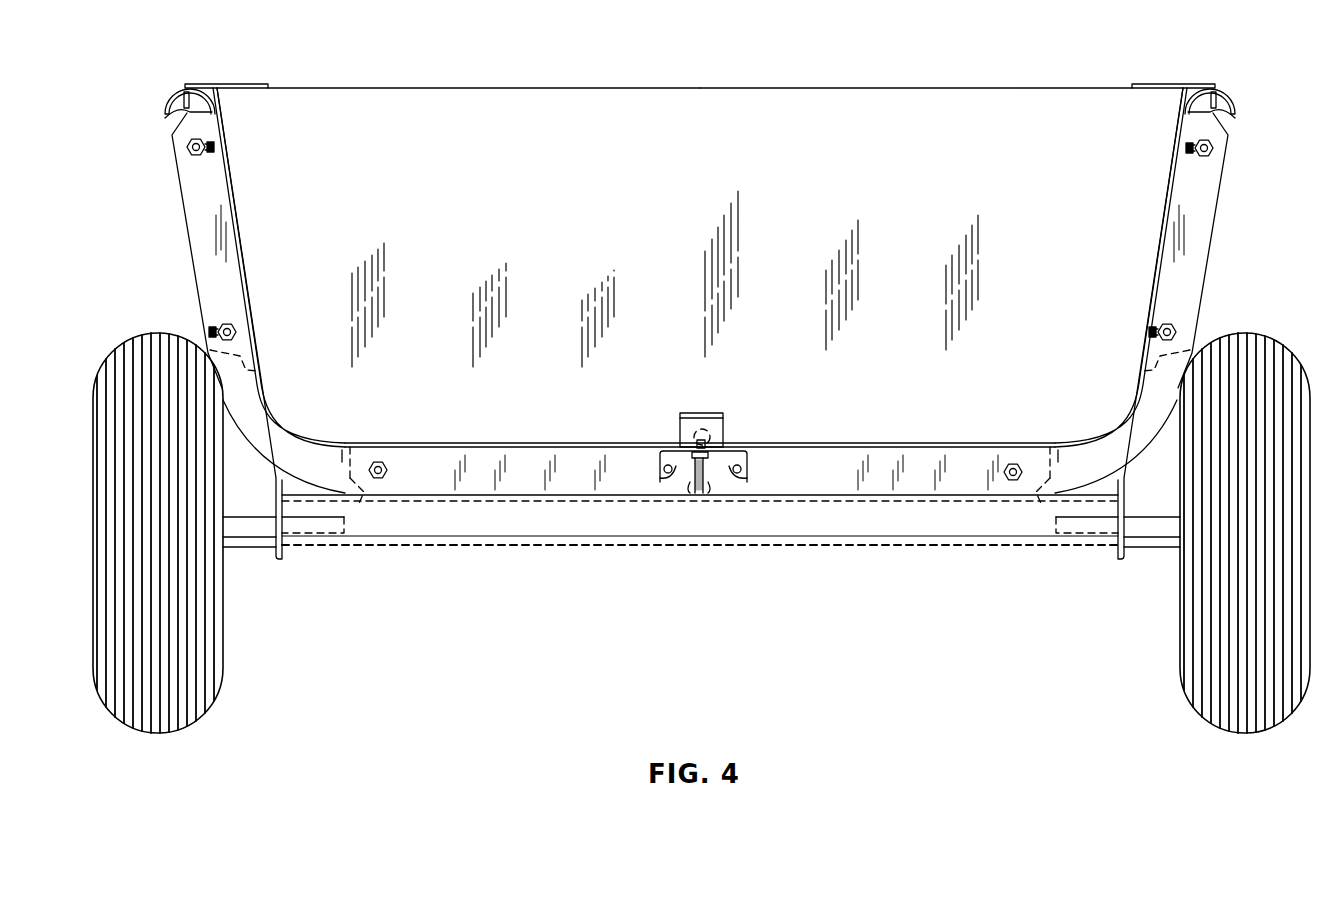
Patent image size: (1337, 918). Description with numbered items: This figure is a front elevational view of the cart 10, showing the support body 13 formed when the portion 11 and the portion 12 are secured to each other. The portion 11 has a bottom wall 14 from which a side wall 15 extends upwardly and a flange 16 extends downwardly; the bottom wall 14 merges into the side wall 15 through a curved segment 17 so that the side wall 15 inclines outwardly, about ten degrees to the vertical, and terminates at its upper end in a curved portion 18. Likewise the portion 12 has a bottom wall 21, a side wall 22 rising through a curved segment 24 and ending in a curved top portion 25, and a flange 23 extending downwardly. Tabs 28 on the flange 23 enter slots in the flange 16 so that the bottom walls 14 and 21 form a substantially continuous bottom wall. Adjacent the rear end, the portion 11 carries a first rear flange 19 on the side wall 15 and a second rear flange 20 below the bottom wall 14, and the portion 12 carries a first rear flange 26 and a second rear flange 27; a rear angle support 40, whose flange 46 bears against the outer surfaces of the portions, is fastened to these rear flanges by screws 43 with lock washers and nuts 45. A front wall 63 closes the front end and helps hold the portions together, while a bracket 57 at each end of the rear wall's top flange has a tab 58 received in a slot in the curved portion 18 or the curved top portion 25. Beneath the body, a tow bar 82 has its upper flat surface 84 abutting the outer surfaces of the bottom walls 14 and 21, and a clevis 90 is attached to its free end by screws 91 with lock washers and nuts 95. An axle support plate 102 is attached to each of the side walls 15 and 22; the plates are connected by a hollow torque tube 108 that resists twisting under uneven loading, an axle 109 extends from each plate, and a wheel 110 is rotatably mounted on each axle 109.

The cart 10 is at (1052, 53).
The portion 11 is at (343, 451).
The portion 12 is at (1108, 436).
The support body 13 is at (501, 88).
The bottom wall 14 is at (543, 443).
The side wall 15 is at (238, 243).
The flange 16 is at (694, 494).
The curved segment 17 is at (333, 447).
The curved portion 18 is at (170, 103).
The first rear flange 19 is at (258, 371).
The second rear flange 20 is at (360, 508).
The bottom wall 21 is at (937, 443).
The side wall 22 is at (1158, 243).
The flange 23 is at (708, 494).
The curved segment 24 is at (1078, 448).
The curved top portion 25 is at (1232, 104).
The first rear flange 26 is at (1145, 383).
The second rear flange 27 is at (1044, 500).
The tabs 28 is at (686, 476).
The rear angle support 40 is at (1132, 470).
The screws 43 is at (185, 152).
The nuts 45 is at (205, 153).
The flange 46 is at (807, 457).
The bracket 57 is at (224, 86).
The tab 58 is at (168, 118).
The front wall 63 is at (910, 88).
The tow bar 82 is at (750, 486).
The upper flat surface 84 is at (672, 451).
The clevis 90 is at (704, 413).
The screws 91 is at (712, 434).
The nuts 95 is at (746, 456).
The axle support plate 102 is at (274, 501).
The torque tube 108 is at (872, 550).
The axle 109 is at (346, 540).
The wheel 110 is at (93, 607).